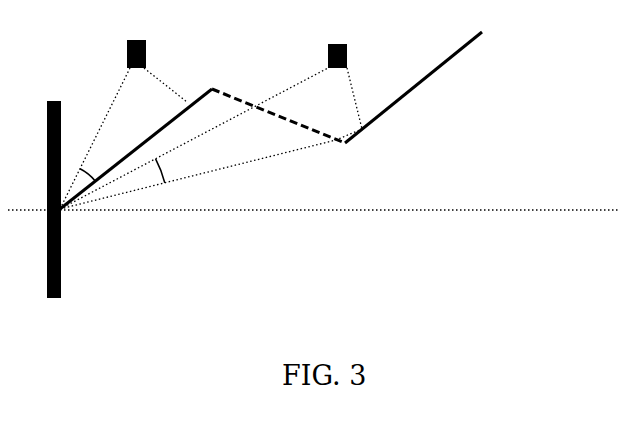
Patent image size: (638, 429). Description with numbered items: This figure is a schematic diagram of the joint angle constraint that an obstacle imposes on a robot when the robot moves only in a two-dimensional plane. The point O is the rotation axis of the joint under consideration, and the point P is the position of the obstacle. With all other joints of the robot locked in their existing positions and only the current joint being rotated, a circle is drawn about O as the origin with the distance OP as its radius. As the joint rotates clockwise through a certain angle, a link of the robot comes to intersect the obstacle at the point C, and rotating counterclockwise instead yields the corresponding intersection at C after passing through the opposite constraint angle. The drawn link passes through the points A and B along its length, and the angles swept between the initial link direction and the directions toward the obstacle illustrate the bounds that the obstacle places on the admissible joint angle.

The rotation axis of the joint O is at (41, 199).
The position of the obstacle P is at (212, 126).
The reflection point on mirror A is at (282, 130).
The end of mirror line B is at (429, 75).
The intersection point C is at (228, 161).